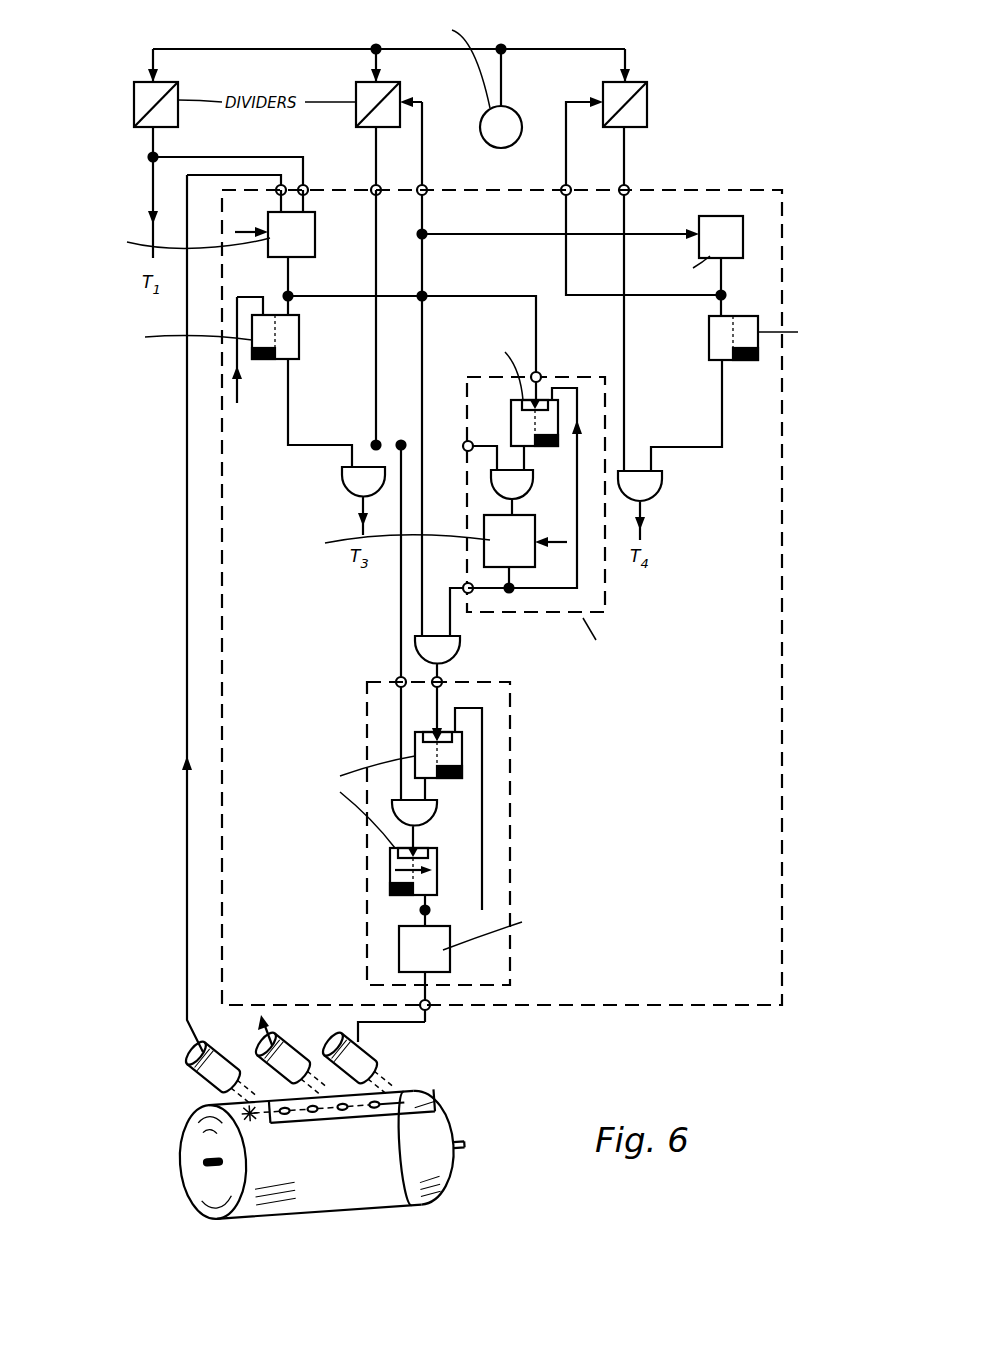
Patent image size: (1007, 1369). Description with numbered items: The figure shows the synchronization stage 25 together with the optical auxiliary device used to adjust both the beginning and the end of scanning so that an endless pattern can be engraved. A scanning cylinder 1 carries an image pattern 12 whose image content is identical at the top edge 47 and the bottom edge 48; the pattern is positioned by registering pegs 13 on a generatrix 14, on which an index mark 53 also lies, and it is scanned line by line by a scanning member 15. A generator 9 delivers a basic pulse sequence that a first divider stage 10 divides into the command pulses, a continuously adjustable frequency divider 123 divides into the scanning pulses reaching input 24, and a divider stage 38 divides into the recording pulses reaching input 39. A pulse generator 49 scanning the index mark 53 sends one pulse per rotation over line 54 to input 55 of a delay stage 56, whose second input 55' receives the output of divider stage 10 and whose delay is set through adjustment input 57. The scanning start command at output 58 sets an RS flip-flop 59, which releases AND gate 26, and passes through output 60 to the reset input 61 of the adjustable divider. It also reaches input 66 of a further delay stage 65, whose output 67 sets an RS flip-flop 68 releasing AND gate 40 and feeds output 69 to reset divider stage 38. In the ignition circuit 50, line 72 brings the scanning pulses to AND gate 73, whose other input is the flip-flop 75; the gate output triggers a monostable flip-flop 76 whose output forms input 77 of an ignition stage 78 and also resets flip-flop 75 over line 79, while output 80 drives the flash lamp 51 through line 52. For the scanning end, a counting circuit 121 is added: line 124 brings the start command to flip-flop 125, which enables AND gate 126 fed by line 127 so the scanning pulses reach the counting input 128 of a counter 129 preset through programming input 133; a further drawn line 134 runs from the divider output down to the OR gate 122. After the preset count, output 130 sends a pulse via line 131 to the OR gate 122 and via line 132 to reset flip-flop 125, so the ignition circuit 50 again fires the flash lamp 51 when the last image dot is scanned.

The scanning cylinder 1 is at (291, 1156).
The generator 9 is at (513, 110).
The first divider stage 10 is at (175, 96).
The image pattern 12 is at (445, 1146).
The registering pegs 13 is at (387, 1085).
The generatrix 14 is at (416, 1088).
The scanning member 15 is at (272, 1050).
The input 24 is at (379, 186).
The synchronization stage 25 is at (582, 1005).
The AND gate 26 is at (342, 484).
The divider stage 38 is at (647, 102).
The input 39 is at (628, 187).
The AND gate 40 is at (655, 490).
The top edge 47 is at (313, 1130).
The bottom edge 48 is at (355, 1144).
The pulse generator 49 is at (200, 1052).
The ignition circuit 50 is at (497, 722).
The flash lamp 51 is at (350, 1048).
The line 52 is at (398, 1022).
The index mark 53 is at (258, 1093).
The line 54 is at (187, 893).
The input 55 is at (236, 164).
The second input 55' is at (253, 174).
The delay stage 56 is at (315, 240).
The adjustment input 57 is at (264, 230).
The output 58 is at (291, 260).
The RS flip-flop 59 is at (299, 350).
The output 60 is at (426, 187).
The reset input 61 is at (410, 100).
The delay stage 65 is at (743, 240).
The input 66 is at (699, 232).
The output 67 is at (723, 262).
The RS flip-flop 68 is at (709, 346).
The output 69 is at (570, 187).
The line 72 is at (401, 583).
The AND gate 73 is at (432, 818).
The flip-flop 75 is at (440, 782).
The monostable flip-flop 76 is at (437, 886).
The input 77 is at (420, 910).
The ignition stage 78 is at (450, 955).
The line 79 is at (482, 836).
The output 80 is at (430, 1008).
The counting circuit 121 is at (590, 392).
The OR gate 122 is at (460, 650).
The continuously adjustable frequency divider 123 is at (392, 90).
The line 124 is at (450, 296).
The flip-flop 125 is at (511, 425).
The AND gate 126 is at (540, 486).
The line 127 is at (376, 392).
The counting input 128 is at (520, 515).
The counter 129 is at (535, 560).
The output 130 is at (511, 590).
The line 131 is at (466, 584).
The line 132 is at (582, 582).
The programming input 133 is at (572, 530).
The line 134 is at (422, 392).